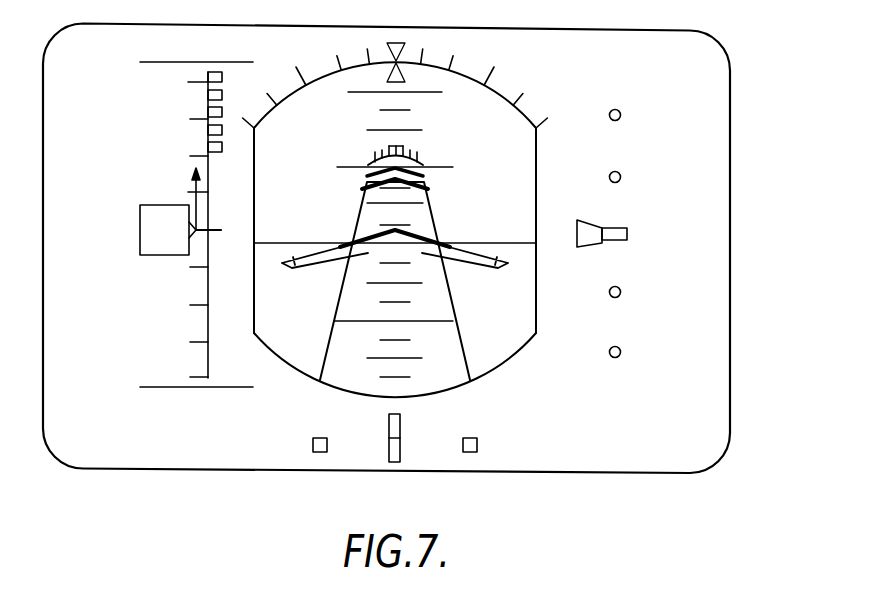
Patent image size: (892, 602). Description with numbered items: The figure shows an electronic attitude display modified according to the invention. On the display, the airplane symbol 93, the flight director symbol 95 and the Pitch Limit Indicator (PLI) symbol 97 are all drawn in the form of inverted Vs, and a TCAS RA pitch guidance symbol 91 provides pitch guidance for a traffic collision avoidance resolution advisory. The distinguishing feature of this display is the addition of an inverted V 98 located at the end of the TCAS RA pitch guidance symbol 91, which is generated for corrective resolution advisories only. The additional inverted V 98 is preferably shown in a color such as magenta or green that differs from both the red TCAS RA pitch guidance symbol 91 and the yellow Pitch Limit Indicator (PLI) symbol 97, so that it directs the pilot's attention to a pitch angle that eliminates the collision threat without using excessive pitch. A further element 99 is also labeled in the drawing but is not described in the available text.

The TCAS RA pitch guidance symbol 91 is at (431, 212).
The airplane symbol 93 is at (331, 258).
The flight director symbol 95 is at (318, 245).
The Pitch Limit Indicator (PLI) symbol 97 is at (369, 164).
The inverted V 98 is at (430, 168).
The lower command chevron 99 is at (430, 187).